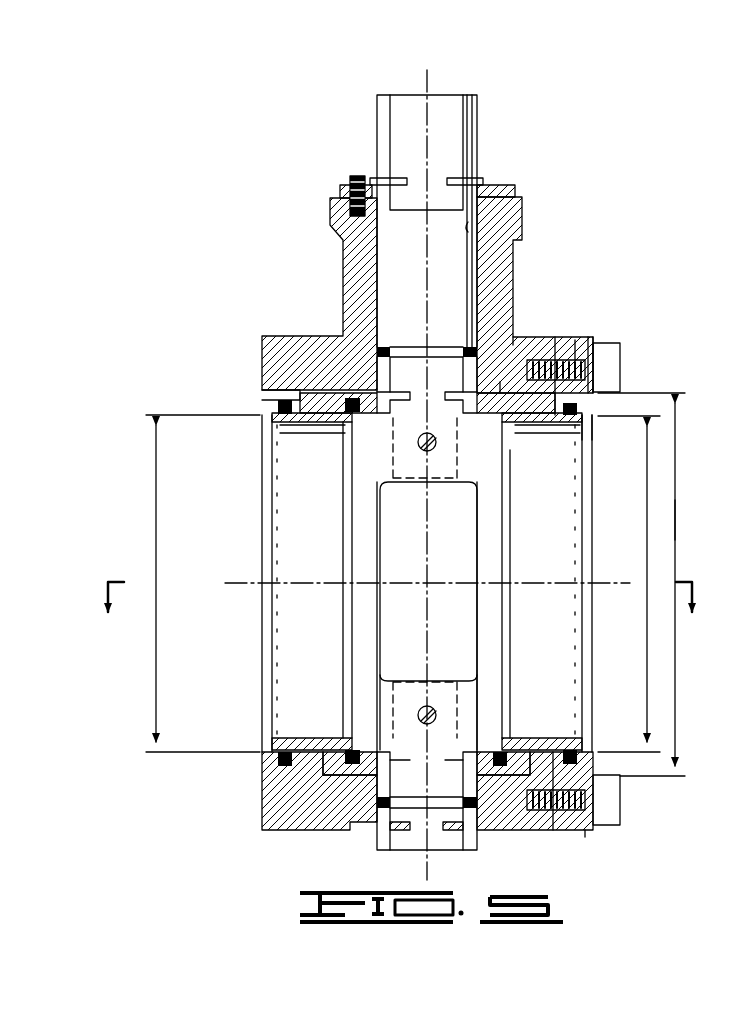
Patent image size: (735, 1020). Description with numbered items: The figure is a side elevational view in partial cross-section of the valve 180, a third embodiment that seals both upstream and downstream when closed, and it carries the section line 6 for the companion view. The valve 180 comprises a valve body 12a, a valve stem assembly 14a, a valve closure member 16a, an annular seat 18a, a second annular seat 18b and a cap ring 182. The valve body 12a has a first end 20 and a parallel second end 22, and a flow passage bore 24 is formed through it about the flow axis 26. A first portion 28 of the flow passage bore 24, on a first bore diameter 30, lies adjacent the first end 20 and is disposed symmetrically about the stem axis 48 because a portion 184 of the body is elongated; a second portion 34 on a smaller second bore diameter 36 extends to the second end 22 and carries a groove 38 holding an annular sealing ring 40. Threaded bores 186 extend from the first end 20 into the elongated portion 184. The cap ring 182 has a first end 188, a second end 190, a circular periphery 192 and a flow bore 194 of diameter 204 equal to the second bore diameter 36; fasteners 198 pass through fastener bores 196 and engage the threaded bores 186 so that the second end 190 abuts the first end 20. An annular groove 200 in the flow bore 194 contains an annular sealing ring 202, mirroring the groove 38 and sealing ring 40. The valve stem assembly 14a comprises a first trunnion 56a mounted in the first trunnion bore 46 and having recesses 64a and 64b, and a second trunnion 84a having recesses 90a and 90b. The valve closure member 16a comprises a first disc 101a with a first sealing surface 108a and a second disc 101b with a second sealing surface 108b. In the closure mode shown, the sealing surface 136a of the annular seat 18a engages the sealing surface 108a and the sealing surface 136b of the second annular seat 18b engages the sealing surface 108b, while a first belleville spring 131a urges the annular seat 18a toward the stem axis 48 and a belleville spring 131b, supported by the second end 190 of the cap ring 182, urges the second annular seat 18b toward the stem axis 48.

The stem axis 48 is at (433, 82).
The valve stem assembly 14a is at (477, 112).
The valve 180 is at (500, 148).
The first trunnion bore 46 is at (472, 225).
The valve body 12a is at (522, 252).
The first trunnion 56a is at (413, 241).
The second end 22 is at (262, 338).
The first belleville spring 131a is at (305, 405).
The annular sealing ring 40 is at (281, 402).
The groove 38 is at (276, 408).
The second portion 34 is at (268, 417).
The second bore diameter 36 is at (155, 472).
The recess 64a is at (390, 396).
The recess 64b is at (456, 396).
The belleville spring 131b is at (503, 413).
The annular sealing ring 202 is at (565, 433).
The annular groove 200 is at (580, 410).
The circular flow bore 194 is at (587, 432).
The elongated portion 184 is at (505, 338).
The second end 190 is at (548, 358).
The first portion 28 is at (505, 378).
The first end 20 is at (555, 347).
The circular periphery 192 is at (578, 340).
The cap ring 182 is at (578, 347).
The first end 188 is at (595, 345).
The fasteners 198 is at (612, 362).
The fastener bores 196 is at (578, 372).
The valve closure member 16a is at (345, 638).
The sealing surface 136a is at (347, 435).
The sealing surface 136b is at (582, 490).
The first sealing surface 108a is at (355, 505).
The second sealing surface 108b is at (495, 545).
The first disc 101a is at (345, 613).
The second disc 101b is at (512, 640).
The recess 90a is at (385, 755).
The recess 90b is at (467, 758).
The annular seat 18a is at (307, 735).
The second annular seat 18b is at (538, 735).
The flow passage bore 24 is at (518, 822).
The second trunnion 84a is at (450, 845).
The threaded bores 186 is at (560, 832).
The flow axis 26 is at (629, 584).
The diameter 204 is at (675, 492).
The first bore diameter 30 is at (675, 535).
The section line 6- 6 is at (397, 617).